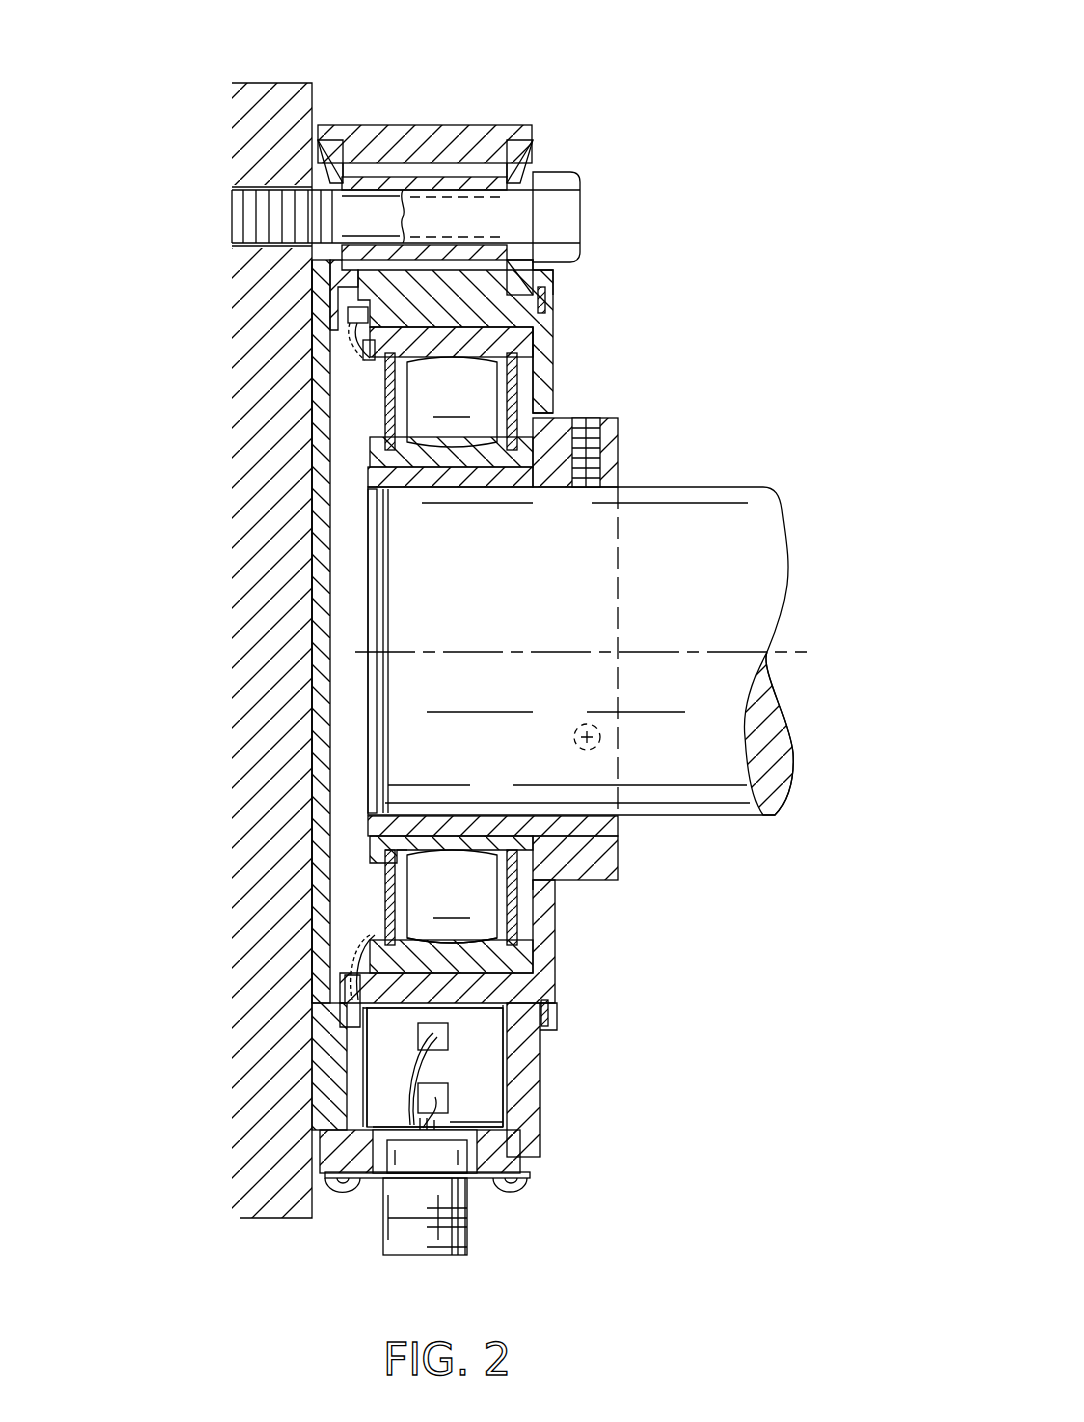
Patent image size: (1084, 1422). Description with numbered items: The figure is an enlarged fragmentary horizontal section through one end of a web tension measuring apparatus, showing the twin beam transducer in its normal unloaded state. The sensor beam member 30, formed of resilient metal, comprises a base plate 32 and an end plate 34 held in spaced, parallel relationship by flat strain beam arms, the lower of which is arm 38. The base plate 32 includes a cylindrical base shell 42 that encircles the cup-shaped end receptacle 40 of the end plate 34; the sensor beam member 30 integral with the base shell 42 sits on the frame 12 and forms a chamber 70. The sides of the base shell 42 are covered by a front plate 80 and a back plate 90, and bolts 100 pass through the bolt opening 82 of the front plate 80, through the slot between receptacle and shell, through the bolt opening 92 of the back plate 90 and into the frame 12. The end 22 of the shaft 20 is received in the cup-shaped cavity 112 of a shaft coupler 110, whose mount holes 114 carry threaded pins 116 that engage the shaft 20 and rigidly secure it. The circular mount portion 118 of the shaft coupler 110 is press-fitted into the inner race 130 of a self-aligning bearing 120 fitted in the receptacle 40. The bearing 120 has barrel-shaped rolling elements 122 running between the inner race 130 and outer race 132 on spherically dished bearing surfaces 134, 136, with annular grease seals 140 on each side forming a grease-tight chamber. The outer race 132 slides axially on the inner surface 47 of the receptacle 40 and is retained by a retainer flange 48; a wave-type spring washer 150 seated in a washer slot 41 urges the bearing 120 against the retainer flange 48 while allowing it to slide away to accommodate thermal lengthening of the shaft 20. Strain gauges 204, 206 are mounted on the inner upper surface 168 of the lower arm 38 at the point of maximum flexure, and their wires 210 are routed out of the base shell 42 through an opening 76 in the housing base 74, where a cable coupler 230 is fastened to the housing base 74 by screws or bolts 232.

The frame 12 is at (257, 80).
The shaft 20 is at (723, 513).
The end of shaft 22 is at (392, 612).
The sensor beam member 30 is at (475, 272).
The base plate 32 is at (353, 1135).
The end plate 34 is at (390, 998).
The arm 38 is at (493, 1080).
The cup-shaped end receptacle 40 is at (540, 320).
The washer slot 41 is at (363, 310).
The base shell 42 is at (433, 132).
The inner surface of receptacle 47 is at (368, 357).
The retainer flange 48 is at (545, 363).
The chamber 70 is at (345, 722).
The housing base 74 is at (530, 1163).
The opening 76 is at (470, 1152).
The front plate 80 is at (523, 1048).
The bolt opening 82 is at (533, 247).
The back plate 90 is at (323, 792).
The bolt opening 92 is at (330, 185).
The bolts 100 is at (572, 228).
The shaft coupler 110 is at (616, 840).
The cup-shaped cavity 112 is at (562, 815).
The mount holes 114 is at (600, 443).
The pins 116 is at (583, 440).
The circular mount portion 118 is at (403, 472).
The self-aligning bearing 120 is at (523, 903).
The rolling elements 122 is at (455, 430).
The inner race 130 is at (417, 840).
The outer race 132 is at (500, 958).
The bearing surface 134 is at (422, 852).
The bearing surface 136 is at (455, 933).
The grease seals 140 is at (515, 917).
The spring washer 150 is at (363, 335).
The inner lower surface 168 is at (470, 1060).
The strain gauge 204 is at (418, 1032).
The strain gauge 206 is at (433, 1100).
The wires 210 is at (413, 1068).
The cable coupler 230 is at (400, 1247).
The screws or bolts 232 is at (513, 1192).